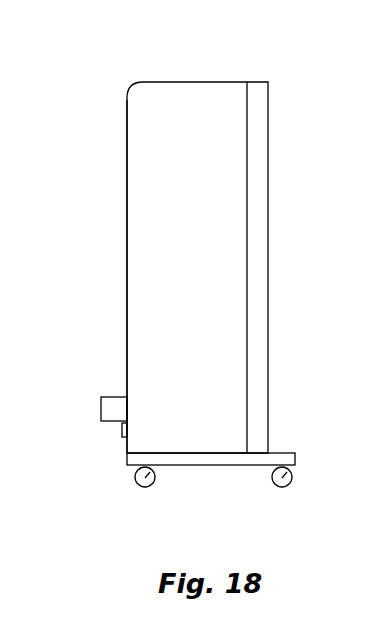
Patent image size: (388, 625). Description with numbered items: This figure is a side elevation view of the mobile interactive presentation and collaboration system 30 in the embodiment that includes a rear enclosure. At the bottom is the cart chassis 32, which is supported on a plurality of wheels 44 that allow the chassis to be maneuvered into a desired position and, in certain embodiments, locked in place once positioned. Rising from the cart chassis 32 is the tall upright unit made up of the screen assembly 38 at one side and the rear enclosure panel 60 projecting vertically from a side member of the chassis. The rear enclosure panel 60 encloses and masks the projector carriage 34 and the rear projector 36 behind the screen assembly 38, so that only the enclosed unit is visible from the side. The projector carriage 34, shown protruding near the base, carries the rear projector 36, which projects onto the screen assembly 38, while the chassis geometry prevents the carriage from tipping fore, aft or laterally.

The mobile interactive presentation and collaboration system 30 is at (281, 65).
The cart chassis 32 is at (228, 455).
The projector carriage 34 is at (120, 428).
The rear projector 36 is at (110, 396).
The screen assembly 38 is at (253, 157).
The wheels 44 is at (137, 492).
The rear enclosure panel 60 is at (175, 233).